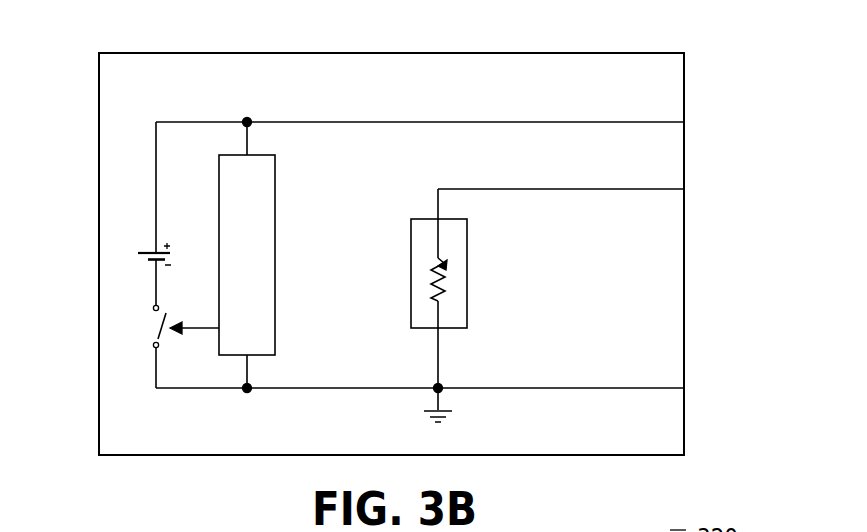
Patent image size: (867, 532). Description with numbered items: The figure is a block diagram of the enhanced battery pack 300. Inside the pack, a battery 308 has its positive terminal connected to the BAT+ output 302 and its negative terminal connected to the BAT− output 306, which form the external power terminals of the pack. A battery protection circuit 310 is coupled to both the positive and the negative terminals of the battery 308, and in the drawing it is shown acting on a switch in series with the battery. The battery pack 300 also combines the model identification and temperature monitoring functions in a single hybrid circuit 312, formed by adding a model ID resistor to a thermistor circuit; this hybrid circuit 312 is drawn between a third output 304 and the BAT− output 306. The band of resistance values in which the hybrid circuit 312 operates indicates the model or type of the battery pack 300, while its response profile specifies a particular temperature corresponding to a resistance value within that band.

The enhanced battery pack 300 is at (575, 53).
The BAT+ output 302 is at (684, 122).
The hybrid circuit terminal rail 304 is at (684, 189).
The BAT− output 306 is at (684, 387).
The battery 308 is at (132, 252).
The battery protection circuit 310 is at (275, 243).
The hybrid circuit 312 is at (467, 242).